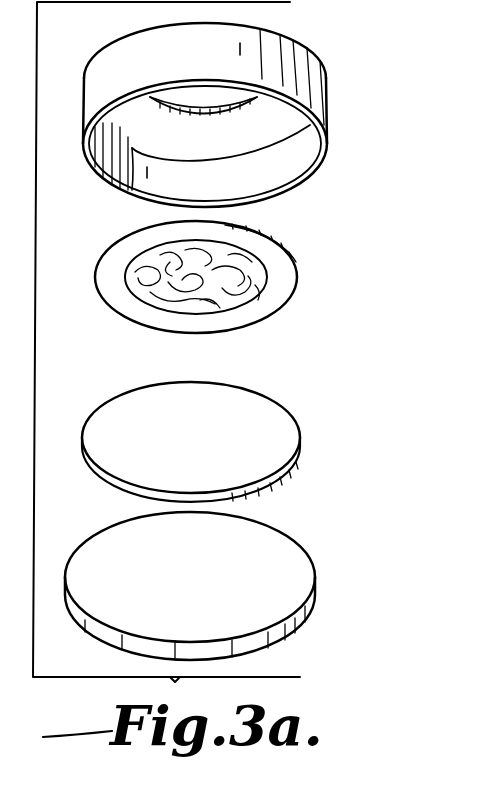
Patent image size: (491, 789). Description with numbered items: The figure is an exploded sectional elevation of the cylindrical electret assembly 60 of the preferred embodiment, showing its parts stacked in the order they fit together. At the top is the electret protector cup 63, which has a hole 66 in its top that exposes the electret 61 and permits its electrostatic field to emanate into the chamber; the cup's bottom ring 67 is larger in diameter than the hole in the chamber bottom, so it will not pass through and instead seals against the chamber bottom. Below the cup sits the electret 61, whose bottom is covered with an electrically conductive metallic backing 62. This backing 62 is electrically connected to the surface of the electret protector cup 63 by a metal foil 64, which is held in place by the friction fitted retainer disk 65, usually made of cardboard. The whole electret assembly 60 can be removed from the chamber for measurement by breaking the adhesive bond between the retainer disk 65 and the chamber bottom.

The electret assembly 60 is at (346, 346).
The electret 61 is at (285, 258).
The electrically conductive metallic backing 62 is at (258, 287).
The electret protector cup 63 is at (325, 73).
The metal foil 64 is at (297, 429).
The retainer disk 65 is at (305, 567).
The hole 66 is at (212, 100).
The bottom ring 67 is at (327, 162).